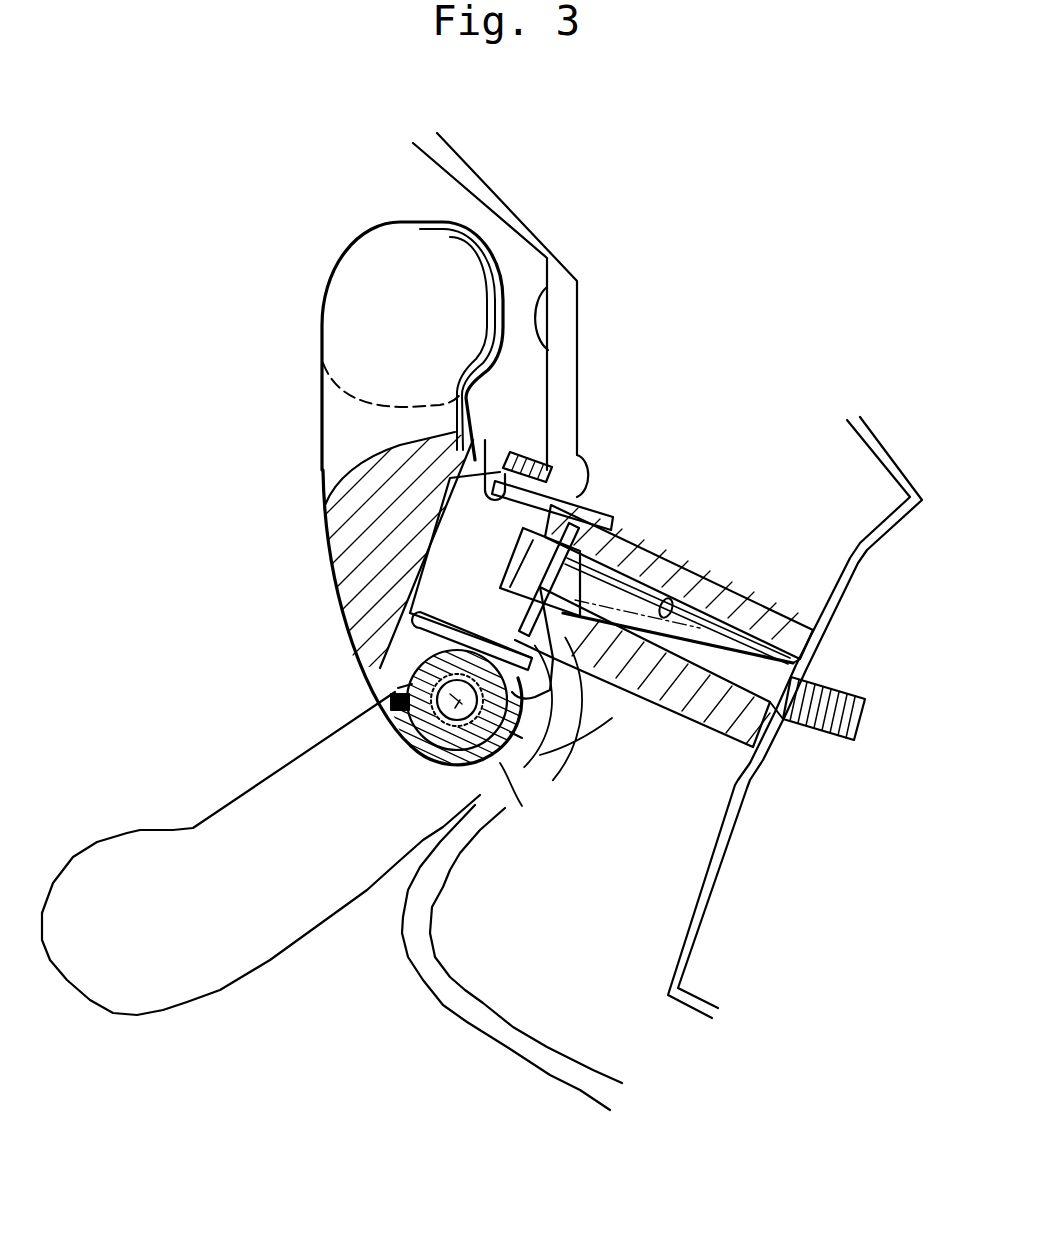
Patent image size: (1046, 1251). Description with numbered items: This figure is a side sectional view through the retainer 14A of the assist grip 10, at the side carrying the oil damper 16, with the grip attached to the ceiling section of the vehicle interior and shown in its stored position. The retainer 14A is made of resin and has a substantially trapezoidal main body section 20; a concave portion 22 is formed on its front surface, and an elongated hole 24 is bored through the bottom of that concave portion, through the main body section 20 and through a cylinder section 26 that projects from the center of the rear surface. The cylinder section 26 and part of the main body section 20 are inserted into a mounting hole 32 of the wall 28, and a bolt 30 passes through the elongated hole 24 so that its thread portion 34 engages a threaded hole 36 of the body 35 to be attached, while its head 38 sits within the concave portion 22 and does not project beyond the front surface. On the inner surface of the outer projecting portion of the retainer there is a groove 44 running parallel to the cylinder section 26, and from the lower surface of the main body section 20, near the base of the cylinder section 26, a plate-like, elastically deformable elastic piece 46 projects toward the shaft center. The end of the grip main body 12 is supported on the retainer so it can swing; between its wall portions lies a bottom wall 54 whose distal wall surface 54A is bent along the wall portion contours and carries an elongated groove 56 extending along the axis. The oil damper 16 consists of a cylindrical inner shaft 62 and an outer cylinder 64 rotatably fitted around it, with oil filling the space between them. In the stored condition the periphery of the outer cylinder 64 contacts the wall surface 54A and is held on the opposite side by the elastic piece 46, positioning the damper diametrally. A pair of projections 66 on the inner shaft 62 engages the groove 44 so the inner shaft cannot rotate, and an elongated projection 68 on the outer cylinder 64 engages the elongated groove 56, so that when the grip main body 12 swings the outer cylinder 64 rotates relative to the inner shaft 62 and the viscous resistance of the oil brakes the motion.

The assist grip 10 is at (285, 232).
The grip main body 12 is at (325, 437).
The retainer 14A is at (700, 396).
The oil damper 16 is at (520, 772).
The main body section 20 is at (494, 440).
The concave portion 22 is at (495, 468).
The elongated hole 24 is at (667, 600).
The cylinder section 26 is at (742, 607).
The wall 28 is at (548, 287).
The bolt 30 is at (613, 597).
The mounting hole 32 is at (593, 466).
The thread portion 34 is at (855, 700).
The body to be attached 35 is at (848, 556).
The threaded hole 36 is at (823, 745).
The head 38 is at (574, 493).
The groove 44 is at (398, 615).
The elastic piece 46 is at (550, 697).
The bottom wall 54 is at (417, 649).
The wall surface 54A is at (443, 752).
The elongated groove 56 is at (395, 735).
The inner shaft 62 is at (464, 722).
The outer cylinder 64 is at (505, 764).
The projections 66 is at (402, 700).
The elongated projection 68 is at (392, 702).